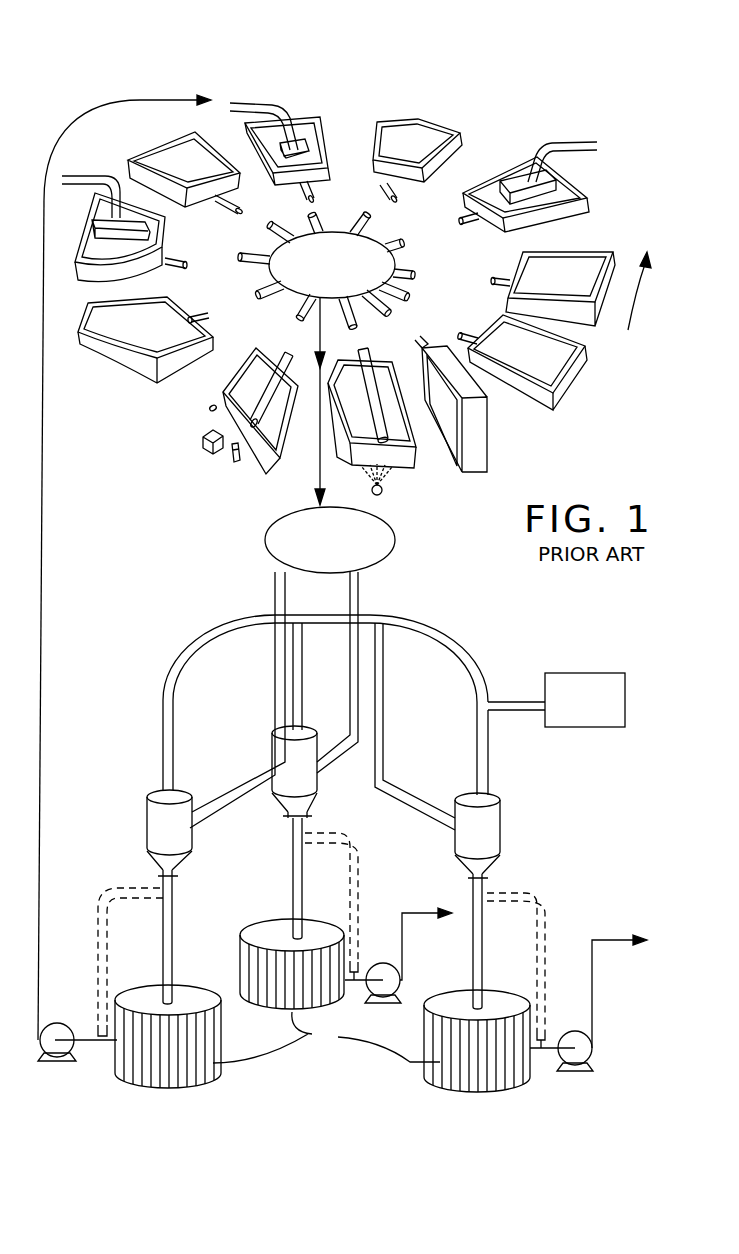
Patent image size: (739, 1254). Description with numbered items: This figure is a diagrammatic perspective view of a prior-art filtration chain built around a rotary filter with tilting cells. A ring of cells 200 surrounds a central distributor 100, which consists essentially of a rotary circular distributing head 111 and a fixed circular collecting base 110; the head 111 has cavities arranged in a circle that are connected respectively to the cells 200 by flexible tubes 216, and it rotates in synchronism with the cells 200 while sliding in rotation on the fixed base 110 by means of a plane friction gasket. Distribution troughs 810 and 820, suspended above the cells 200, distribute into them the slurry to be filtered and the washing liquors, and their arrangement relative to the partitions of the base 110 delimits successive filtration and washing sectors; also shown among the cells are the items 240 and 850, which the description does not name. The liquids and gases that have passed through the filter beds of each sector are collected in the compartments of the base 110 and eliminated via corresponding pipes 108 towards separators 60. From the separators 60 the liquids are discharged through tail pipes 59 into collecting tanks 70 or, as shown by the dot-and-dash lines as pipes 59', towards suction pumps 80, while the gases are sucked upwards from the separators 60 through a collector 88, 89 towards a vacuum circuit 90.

The central distributor 100 is at (352, 263).
The rotary circular distributing head 111 is at (335, 274).
The flexible tubes 216 is at (417, 274).
The cells 200 is at (402, 140).
The distribution trough 820 is at (150, 232).
The distribution trough 810 is at (553, 178).
The product pieces 240 is at (241, 472).
The sprinkler nozzle 850 is at (383, 488).
The fixed circular collecting base 110 is at (340, 552).
The pipes 108 is at (274, 592).
The collector 88 is at (190, 675).
The collector 89 is at (522, 702).
The vacuum circuit 90 is at (598, 711).
The separators 60 is at (177, 841).
The tail pipes 59 is at (318, 913).
The pipes 59' is at (314, 940).
The suction pumps 80 is at (52, 1023).
The collecting tanks 70 is at (326, 1037).